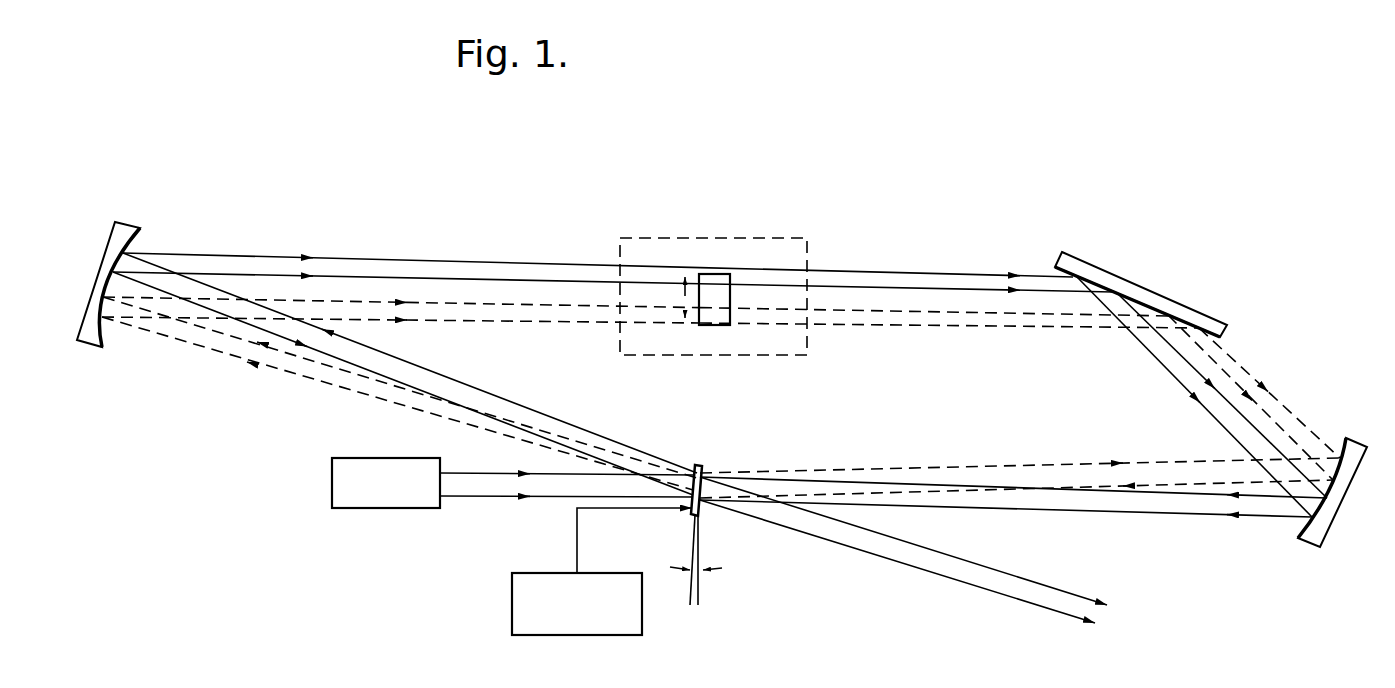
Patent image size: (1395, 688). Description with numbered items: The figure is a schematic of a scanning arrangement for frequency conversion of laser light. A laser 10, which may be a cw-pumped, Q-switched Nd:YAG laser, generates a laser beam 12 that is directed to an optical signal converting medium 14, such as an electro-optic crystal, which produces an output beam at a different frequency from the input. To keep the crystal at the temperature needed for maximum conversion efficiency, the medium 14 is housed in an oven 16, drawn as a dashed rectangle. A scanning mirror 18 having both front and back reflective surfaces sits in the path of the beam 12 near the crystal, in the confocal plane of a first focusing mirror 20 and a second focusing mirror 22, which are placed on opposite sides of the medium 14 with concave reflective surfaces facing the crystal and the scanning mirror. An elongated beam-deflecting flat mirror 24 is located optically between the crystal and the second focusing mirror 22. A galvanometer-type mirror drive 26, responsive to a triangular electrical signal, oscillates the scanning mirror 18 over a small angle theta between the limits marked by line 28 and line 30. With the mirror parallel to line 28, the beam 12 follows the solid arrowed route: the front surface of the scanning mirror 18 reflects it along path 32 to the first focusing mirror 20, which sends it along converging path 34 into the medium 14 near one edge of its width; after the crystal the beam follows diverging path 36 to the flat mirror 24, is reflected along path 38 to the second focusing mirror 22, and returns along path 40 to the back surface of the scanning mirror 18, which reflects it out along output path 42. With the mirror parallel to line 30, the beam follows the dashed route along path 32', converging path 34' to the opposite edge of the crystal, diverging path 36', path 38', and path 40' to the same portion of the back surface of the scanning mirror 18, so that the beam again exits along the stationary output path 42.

The laser 10 is at (332, 455).
The laser beam 12 is at (505, 488).
The optical signal converting medium 14 is at (723, 273).
The oven 16 is at (807, 238).
The scanning mirror 18 is at (702, 507).
The first focusing mirror 20 is at (118, 232).
The second focusing mirror 22 is at (1330, 528).
The beam-deflecting flat mirror 24 is at (1142, 287).
The mirror drive 26 is at (640, 637).
The line 28 is at (688, 587).
The line 30 is at (702, 597).
The path 32 is at (405, 361).
The path 32' is at (399, 393).
The converging path 34 is at (406, 257).
The converging path 34' is at (401, 279).
The diverging path 36 is at (906, 268).
The diverging path 36' is at (950, 335).
The path 38 is at (1202, 397).
The path 38' is at (1254, 397).
The path 40 is at (1013, 519).
The path 40' is at (1020, 461).
The output path 42 is at (1038, 598).